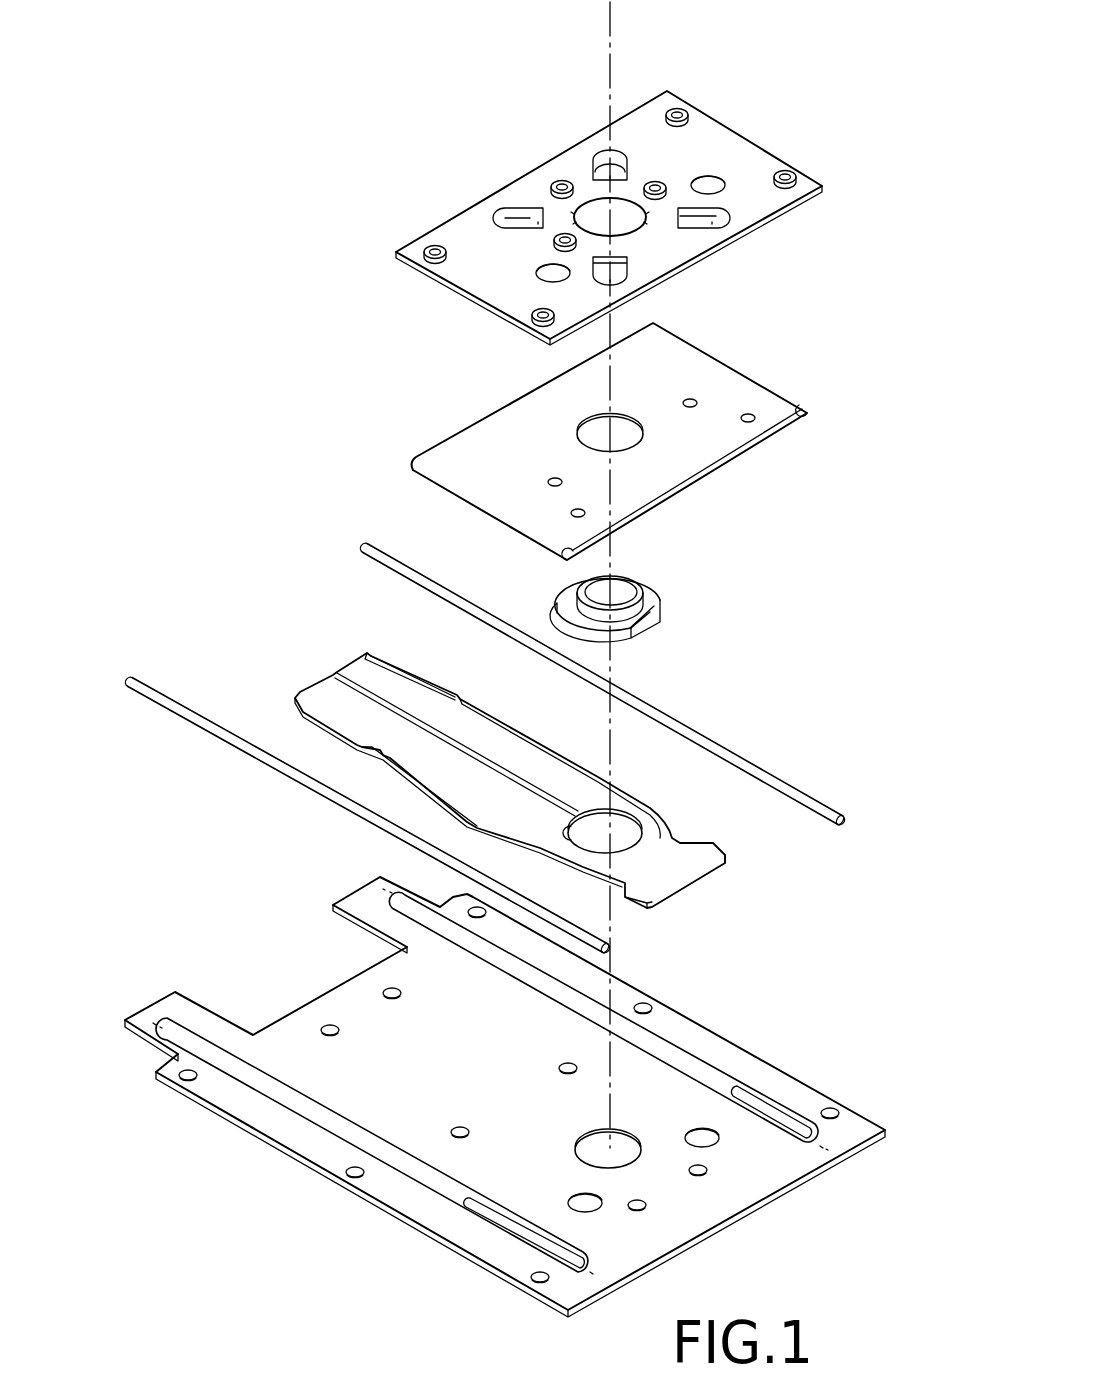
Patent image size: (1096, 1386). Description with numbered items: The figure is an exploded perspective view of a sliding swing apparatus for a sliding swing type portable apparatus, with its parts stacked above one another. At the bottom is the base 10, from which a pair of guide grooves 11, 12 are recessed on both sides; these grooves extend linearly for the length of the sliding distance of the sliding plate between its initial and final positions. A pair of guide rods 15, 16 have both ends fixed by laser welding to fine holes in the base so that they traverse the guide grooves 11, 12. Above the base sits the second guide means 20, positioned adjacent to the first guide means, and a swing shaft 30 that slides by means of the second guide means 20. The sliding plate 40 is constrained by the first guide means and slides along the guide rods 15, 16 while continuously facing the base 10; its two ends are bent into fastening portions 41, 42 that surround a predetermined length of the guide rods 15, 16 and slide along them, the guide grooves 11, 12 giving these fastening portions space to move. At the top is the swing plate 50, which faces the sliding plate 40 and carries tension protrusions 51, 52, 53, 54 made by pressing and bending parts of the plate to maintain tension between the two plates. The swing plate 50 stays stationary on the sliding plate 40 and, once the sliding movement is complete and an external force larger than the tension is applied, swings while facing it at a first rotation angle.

The base 10 is at (505, 1097).
The guide groove 11 is at (740, 1094).
The guide groove 12 is at (472, 1200).
The guide rod 15 is at (108, 676).
The guide rod 16 is at (340, 543).
The second guide means 20 is at (288, 674).
The swing shaft 30 is at (664, 596).
The sliding plate 40 is at (655, 460).
The fastening portion 41 is at (548, 548).
The fastening portion 42 is at (812, 417).
The swing plate 50 is at (620, 207).
The tension protrusion 51 is at (612, 168).
The tension protrusion 52 is at (515, 214).
The tension protrusion 53 is at (626, 282).
The tension protrusion 54 is at (728, 214).